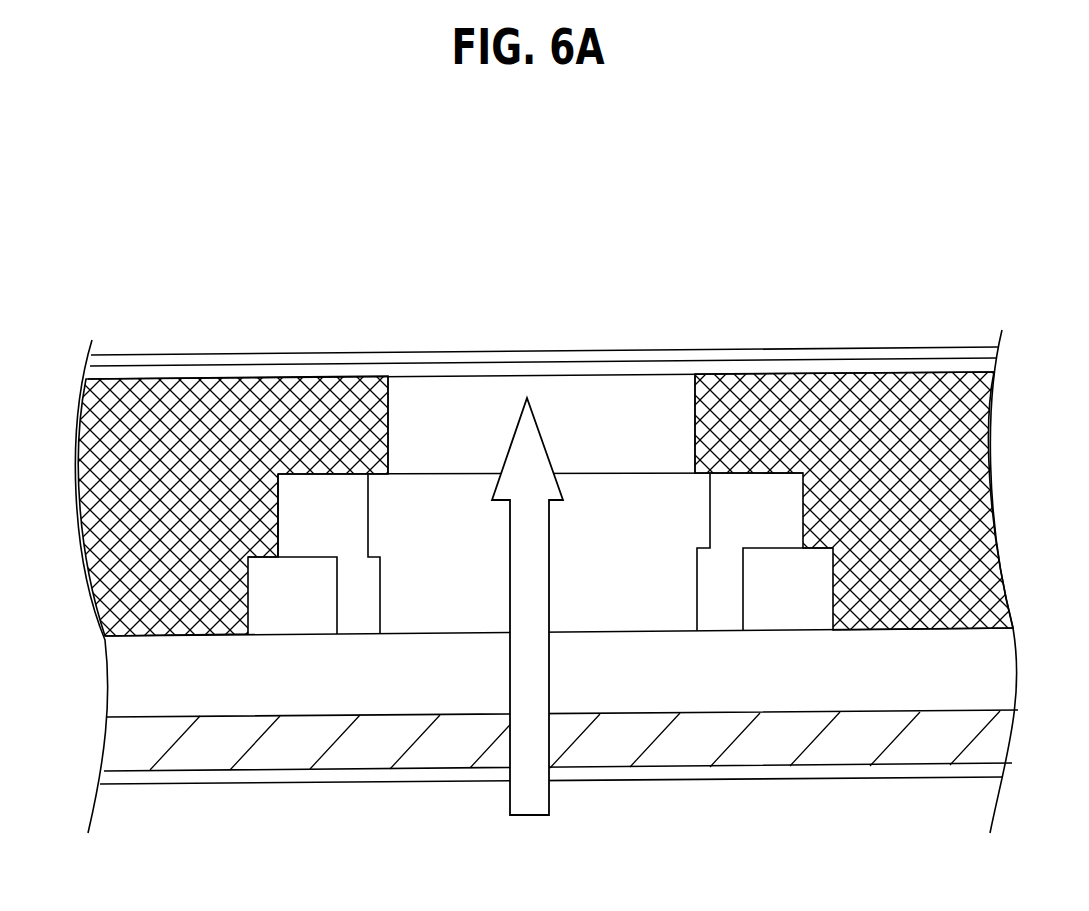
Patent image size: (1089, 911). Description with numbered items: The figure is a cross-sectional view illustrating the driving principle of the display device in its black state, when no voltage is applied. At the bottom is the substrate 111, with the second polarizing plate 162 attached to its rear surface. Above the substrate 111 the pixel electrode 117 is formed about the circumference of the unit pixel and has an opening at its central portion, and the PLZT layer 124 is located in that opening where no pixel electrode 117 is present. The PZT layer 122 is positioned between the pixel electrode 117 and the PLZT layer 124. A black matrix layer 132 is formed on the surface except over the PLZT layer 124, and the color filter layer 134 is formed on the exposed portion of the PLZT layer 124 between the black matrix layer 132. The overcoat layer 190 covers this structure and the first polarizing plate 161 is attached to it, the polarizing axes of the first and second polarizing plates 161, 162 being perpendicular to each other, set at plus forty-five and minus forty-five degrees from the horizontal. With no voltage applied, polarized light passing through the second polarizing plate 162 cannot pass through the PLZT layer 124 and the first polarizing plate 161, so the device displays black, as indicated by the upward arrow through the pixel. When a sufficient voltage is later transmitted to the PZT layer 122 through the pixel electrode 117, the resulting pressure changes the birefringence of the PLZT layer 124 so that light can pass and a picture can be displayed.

The overcoat layer 190 is at (223, 365).
The first polarizing plate 161 is at (363, 360).
The color filter layer 134 is at (502, 380).
The black matrix layer 132 is at (940, 420).
The PZT layer 122 is at (790, 505).
The pixel electrode 117 is at (823, 588).
The PLZT layer 124 is at (642, 618).
The substrate 111 is at (350, 752).
The second polarizing plate 162 is at (215, 778).